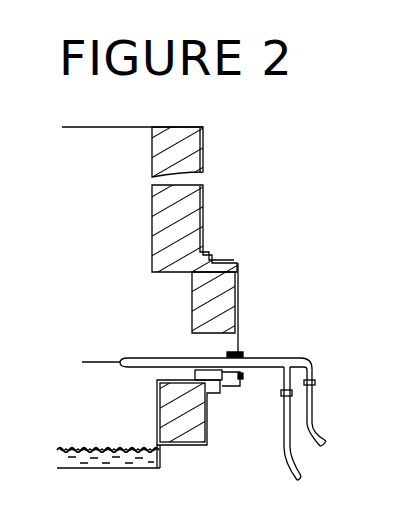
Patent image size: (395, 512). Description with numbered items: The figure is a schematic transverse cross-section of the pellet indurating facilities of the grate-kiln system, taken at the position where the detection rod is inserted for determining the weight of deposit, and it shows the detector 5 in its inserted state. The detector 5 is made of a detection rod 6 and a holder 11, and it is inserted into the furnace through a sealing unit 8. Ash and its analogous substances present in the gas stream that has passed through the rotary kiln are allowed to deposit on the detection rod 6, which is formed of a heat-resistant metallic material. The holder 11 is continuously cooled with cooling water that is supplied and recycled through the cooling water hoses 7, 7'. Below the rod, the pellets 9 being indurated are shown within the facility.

The detector 5 is at (150, 348).
The detection rod 6 is at (97, 363).
The cooling water hose 7 is at (320, 402).
The cooling water hose 7' is at (268, 423).
The sealing unit 8 is at (243, 357).
The pellets 9 is at (75, 447).
The holder 11 is at (258, 368).